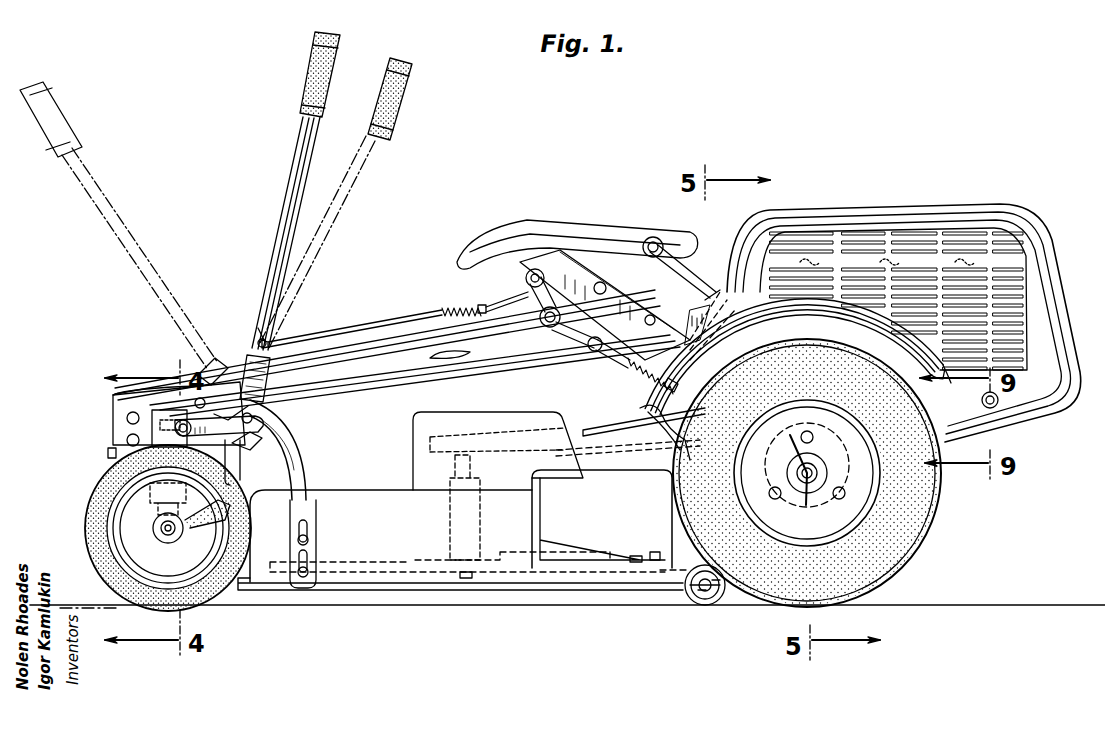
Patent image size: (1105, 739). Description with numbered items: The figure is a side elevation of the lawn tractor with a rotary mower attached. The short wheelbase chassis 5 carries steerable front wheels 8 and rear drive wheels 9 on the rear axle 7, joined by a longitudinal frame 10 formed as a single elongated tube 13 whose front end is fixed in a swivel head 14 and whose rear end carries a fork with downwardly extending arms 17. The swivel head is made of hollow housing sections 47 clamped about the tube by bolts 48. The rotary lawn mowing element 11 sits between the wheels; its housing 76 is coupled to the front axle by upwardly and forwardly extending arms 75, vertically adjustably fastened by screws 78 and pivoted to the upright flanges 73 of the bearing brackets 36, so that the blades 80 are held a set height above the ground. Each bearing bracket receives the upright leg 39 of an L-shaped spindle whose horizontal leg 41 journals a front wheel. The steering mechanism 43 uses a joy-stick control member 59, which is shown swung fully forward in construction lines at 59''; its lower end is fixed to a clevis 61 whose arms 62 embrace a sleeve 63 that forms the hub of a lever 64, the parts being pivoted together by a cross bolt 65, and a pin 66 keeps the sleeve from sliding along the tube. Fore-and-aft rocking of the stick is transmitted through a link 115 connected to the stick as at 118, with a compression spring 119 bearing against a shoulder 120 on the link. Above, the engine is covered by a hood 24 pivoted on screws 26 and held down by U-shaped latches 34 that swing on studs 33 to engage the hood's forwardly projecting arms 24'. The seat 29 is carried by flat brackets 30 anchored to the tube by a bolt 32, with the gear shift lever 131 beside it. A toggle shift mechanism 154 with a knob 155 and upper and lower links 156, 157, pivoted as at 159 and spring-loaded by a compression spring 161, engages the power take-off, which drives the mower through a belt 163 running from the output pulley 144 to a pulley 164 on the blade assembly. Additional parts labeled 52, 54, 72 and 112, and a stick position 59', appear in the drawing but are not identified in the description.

The short wheelbase chassis 5 is at (414, 244).
The rear axle 7 is at (827, 470).
The steerable front wheels 8 is at (222, 595).
The drive wheels 9 is at (940, 512).
The longitudinal frame 10 is at (362, 396).
The rotary lawn mowing element 11 is at (388, 496).
The frame tube 13 is at (520, 357).
The swivel head 14 is at (92, 412).
The fork arms 17 is at (815, 442).
The hood 24 is at (863, 309).
The hood arms 24' is at (657, 429).
The screws 26 is at (998, 405).
The seat 29 is at (708, 603).
The seat brackets 30 is at (640, 235).
The bolt 32 is at (650, 324).
The studs 33 is at (695, 330).
The U-shaped latch 34 is at (666, 380).
The bearing bracket 36 is at (160, 430).
The upright leg of spindle 39 is at (158, 512).
The horizontal leg of spindle 41 is at (170, 538).
The steering mechanism 43 is at (290, 413).
The housing sections 47 is at (120, 398).
The bolts 48 is at (192, 364).
The stop 52 is at (106, 452).
The bolt 54 is at (130, 445).
The steering control stick 59 is at (295, 191).
The control lever 59' is at (340, 203).
The forward position of control stick 59'' is at (119, 226).
The clevis 61 is at (258, 343).
The clevis arms 62 is at (285, 367).
The sleeve 63 is at (247, 362).
The lever 64 is at (240, 460).
The cross bolt 65 is at (260, 422).
The pin 66 is at (322, 366).
The pivot pin 72 is at (185, 420).
The flanges 73 is at (122, 418).
The arms 75 is at (302, 472).
The mower housing 76 is at (406, 540).
The screws 78 is at (308, 542).
The blades 80 is at (576, 578).
The control rod 112 is at (378, 314).
The link 115 is at (515, 304).
The connection 118 is at (258, 328).
The compression spring 119 is at (442, 311).
The shoulder 120 is at (468, 309).
The gear shift lever 131 is at (697, 225).
The output pulley 144 is at (676, 442).
The overcenter shift mechanism 154 is at (612, 366).
The knob 155 is at (539, 321).
The upper link 156 is at (540, 268).
The lower link 157 is at (590, 349).
The pivot 159 is at (560, 262).
The compression spring 161 is at (628, 372).
The belt 163 is at (610, 420).
The pulley 164 is at (445, 432).